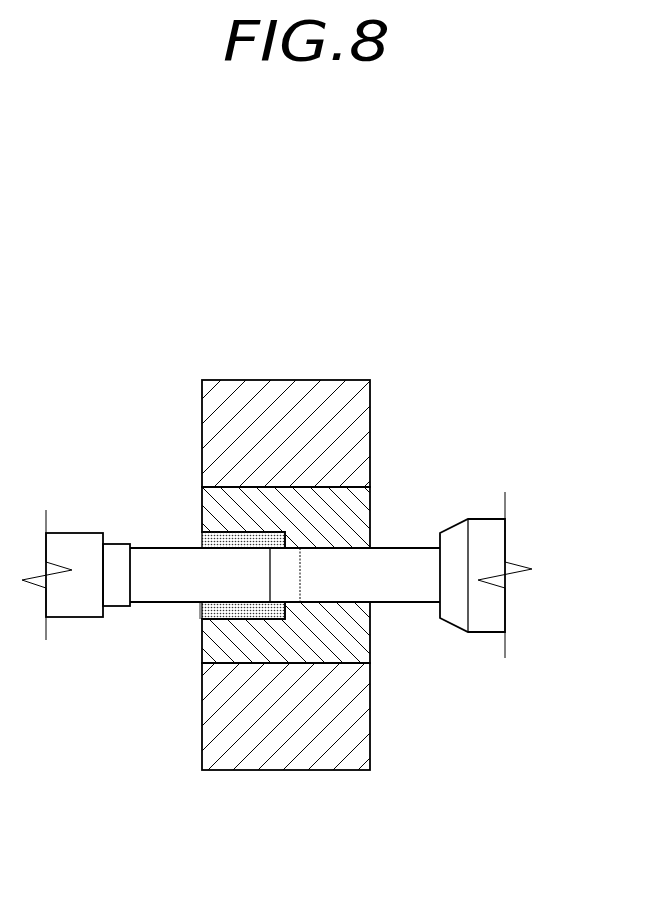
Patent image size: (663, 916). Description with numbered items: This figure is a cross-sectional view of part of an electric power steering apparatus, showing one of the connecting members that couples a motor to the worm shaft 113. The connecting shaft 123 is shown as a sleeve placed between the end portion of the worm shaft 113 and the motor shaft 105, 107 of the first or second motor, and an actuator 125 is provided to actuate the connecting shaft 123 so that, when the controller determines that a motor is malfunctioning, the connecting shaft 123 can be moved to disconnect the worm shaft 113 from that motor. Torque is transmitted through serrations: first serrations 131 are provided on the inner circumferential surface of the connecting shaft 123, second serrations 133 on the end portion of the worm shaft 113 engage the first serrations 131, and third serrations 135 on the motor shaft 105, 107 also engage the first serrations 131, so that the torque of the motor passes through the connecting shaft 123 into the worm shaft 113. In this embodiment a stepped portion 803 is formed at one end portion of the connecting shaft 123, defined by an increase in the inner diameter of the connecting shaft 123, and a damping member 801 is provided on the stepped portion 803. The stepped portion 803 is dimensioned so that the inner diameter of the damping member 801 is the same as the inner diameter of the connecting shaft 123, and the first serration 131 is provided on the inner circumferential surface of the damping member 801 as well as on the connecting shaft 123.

The actuator 125 is at (287, 400).
The connecting shaft 123 is at (353, 507).
The first serration 131 is at (213, 552).
The motor shaft 105 is at (70, 550).
The motor shaft 107 is at (75, 540).
The third serration 135 is at (157, 603).
The second serration 133 is at (398, 604).
The worm shaft 113 is at (490, 540).
The damping member 801 is at (201, 604).
The stepped portion 803 is at (270, 618).